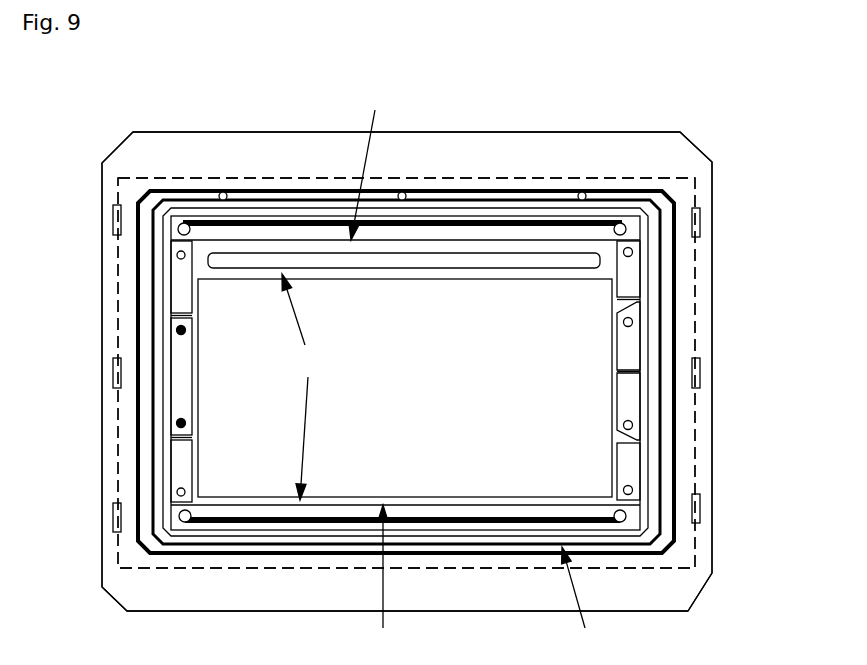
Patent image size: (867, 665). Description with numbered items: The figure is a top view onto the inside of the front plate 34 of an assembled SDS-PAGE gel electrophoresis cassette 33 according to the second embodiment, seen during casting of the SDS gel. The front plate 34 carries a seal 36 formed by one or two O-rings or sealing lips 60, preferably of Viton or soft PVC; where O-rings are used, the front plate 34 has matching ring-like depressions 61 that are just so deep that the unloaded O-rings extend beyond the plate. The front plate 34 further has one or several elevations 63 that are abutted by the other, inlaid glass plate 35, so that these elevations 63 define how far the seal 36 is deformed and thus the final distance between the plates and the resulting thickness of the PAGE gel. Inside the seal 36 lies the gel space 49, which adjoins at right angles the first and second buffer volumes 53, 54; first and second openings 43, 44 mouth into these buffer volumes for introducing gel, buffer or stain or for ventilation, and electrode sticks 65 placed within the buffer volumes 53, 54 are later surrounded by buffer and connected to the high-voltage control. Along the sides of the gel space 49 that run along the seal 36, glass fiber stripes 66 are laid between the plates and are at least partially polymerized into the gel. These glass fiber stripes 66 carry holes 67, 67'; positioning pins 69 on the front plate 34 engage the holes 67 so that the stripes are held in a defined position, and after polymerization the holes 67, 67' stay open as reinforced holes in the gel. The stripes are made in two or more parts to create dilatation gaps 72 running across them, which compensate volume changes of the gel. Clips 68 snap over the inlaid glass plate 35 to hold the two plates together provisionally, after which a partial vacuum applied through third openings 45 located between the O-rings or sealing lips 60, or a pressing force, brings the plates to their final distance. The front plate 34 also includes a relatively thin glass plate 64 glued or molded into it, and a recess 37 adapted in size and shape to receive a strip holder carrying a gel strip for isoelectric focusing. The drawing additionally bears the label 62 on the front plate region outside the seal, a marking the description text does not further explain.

The gel electrophoresis cassette 33 is at (780, 126).
The front plate 34 is at (325, 164).
The glass plate 35 is at (197, 177).
The seal 36 is at (581, 598).
The recess 37 is at (245, 262).
The first opening 43 is at (182, 230).
The second opening 44 is at (187, 517).
The third openings 45 is at (223, 192).
The gel space 49 is at (395, 399).
The first buffer volume 53 is at (384, 577).
The second buffer volume 54 is at (372, 164).
The O-rings or sealing lips 60 is at (257, 190).
The ring-like depressions 61 is at (310, 110).
The housing wall 62 is at (273, 164).
The elevations 63 is at (163, 365).
The glass plate 64 is at (304, 387).
The electrode sticks 65 is at (212, 220).
The glass fiber stripes 66 is at (182, 297).
The holes 67 is at (715, 369).
The holes 67' is at (425, 355).
The clips 68 is at (117, 222).
The positioning pins 69 is at (177, 330).
The dilatation gaps 72 is at (190, 318).